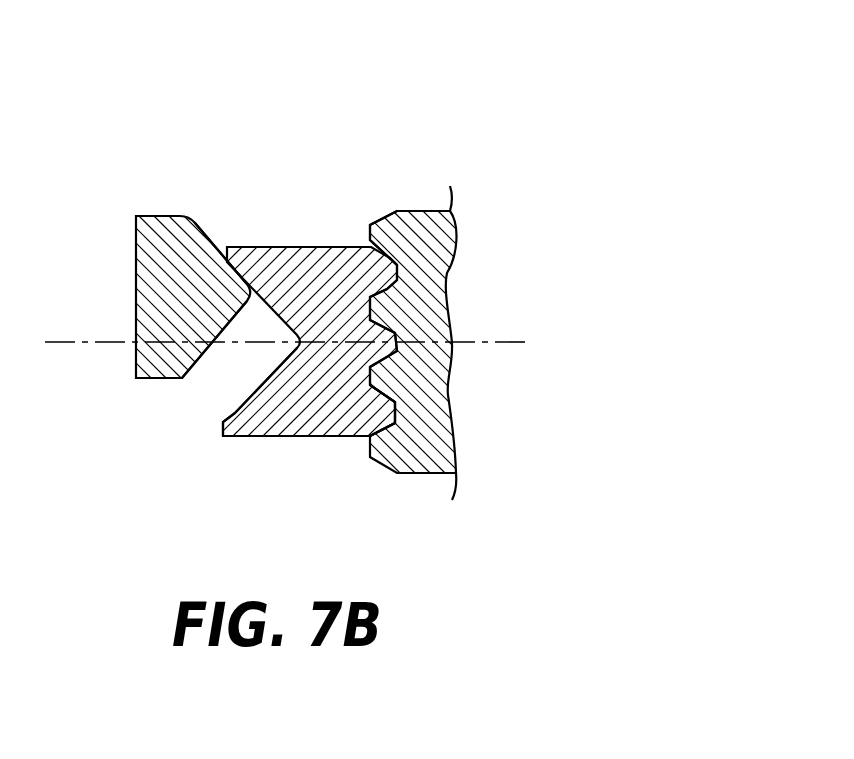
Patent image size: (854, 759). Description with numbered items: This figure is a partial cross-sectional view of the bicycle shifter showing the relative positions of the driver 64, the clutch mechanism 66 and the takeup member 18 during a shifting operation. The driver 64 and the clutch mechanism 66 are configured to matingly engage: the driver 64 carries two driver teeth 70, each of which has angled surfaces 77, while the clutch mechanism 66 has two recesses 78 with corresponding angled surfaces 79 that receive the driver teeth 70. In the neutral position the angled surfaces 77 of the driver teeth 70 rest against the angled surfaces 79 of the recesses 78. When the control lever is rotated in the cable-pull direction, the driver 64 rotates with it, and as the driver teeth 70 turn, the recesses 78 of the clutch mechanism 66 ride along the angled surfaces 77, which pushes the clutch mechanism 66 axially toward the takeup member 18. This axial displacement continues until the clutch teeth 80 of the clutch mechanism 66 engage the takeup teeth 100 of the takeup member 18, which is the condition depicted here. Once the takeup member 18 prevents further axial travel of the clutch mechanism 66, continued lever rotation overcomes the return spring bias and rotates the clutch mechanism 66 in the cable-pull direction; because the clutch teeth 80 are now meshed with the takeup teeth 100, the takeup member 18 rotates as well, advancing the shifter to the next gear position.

The takeup member 18 is at (415, 204).
The driver 64 is at (134, 209).
The clutch mechanism 66 is at (265, 238).
The driver teeth 70 is at (204, 315).
The angled surfaces 77 is at (192, 226).
The recesses 78 is at (255, 382).
The angled surfaces 79 is at (235, 413).
The clutch teeth 80 is at (362, 417).
The takeup teeth 100 is at (380, 220).